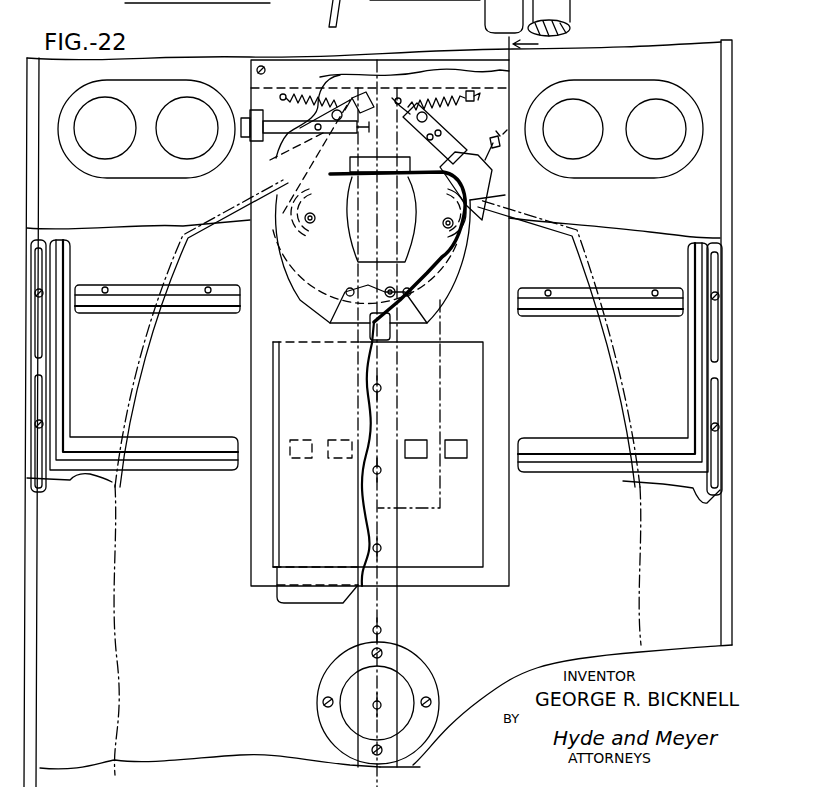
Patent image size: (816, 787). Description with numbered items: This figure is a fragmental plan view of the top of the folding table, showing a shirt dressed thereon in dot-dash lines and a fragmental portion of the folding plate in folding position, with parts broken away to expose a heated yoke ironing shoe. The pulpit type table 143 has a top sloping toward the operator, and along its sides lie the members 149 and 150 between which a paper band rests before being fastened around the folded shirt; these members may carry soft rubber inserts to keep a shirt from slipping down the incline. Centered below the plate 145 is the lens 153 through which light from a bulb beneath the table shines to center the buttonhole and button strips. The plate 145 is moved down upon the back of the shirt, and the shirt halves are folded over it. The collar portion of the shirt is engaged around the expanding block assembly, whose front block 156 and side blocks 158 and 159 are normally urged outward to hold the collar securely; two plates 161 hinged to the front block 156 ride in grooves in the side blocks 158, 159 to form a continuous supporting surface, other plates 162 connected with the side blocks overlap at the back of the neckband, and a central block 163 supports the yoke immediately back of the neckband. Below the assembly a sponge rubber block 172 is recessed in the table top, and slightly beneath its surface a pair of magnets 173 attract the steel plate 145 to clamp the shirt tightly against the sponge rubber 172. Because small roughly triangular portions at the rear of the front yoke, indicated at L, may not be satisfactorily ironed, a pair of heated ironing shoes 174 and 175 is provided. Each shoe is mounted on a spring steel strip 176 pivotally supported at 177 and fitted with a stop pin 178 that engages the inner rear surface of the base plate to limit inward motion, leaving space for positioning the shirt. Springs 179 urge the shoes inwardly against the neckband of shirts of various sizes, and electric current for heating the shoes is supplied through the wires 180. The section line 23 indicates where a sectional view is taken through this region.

The pulpit type table 143 is at (655, 55).
The section line 23- 23 is at (472, 406).
The plate 145 is at (298, 603).
The member 149 is at (112, 450).
The member 150 is at (111, 306).
The lens 153 is at (352, 681).
The front block 156 is at (432, 283).
The side block 158 is at (480, 250).
The side block 159 is at (313, 236).
The plates 161 is at (442, 302).
The plates 162 is at (400, 176).
The central block 163 is at (381, 219).
The sponge rubber block 172 is at (478, 403).
The magnets 173 is at (416, 458).
The heated ironing shoe 174 is at (477, 150).
The heated ironing shoe 175 is at (256, 224).
The spring steel strip 176 is at (307, 135).
The pivot 177 is at (420, 108).
The stop pin 178 is at (397, 100).
The springs 179 is at (456, 95).
The wires 180 is at (500, 144).
The triangular portions L is at (520, 198).